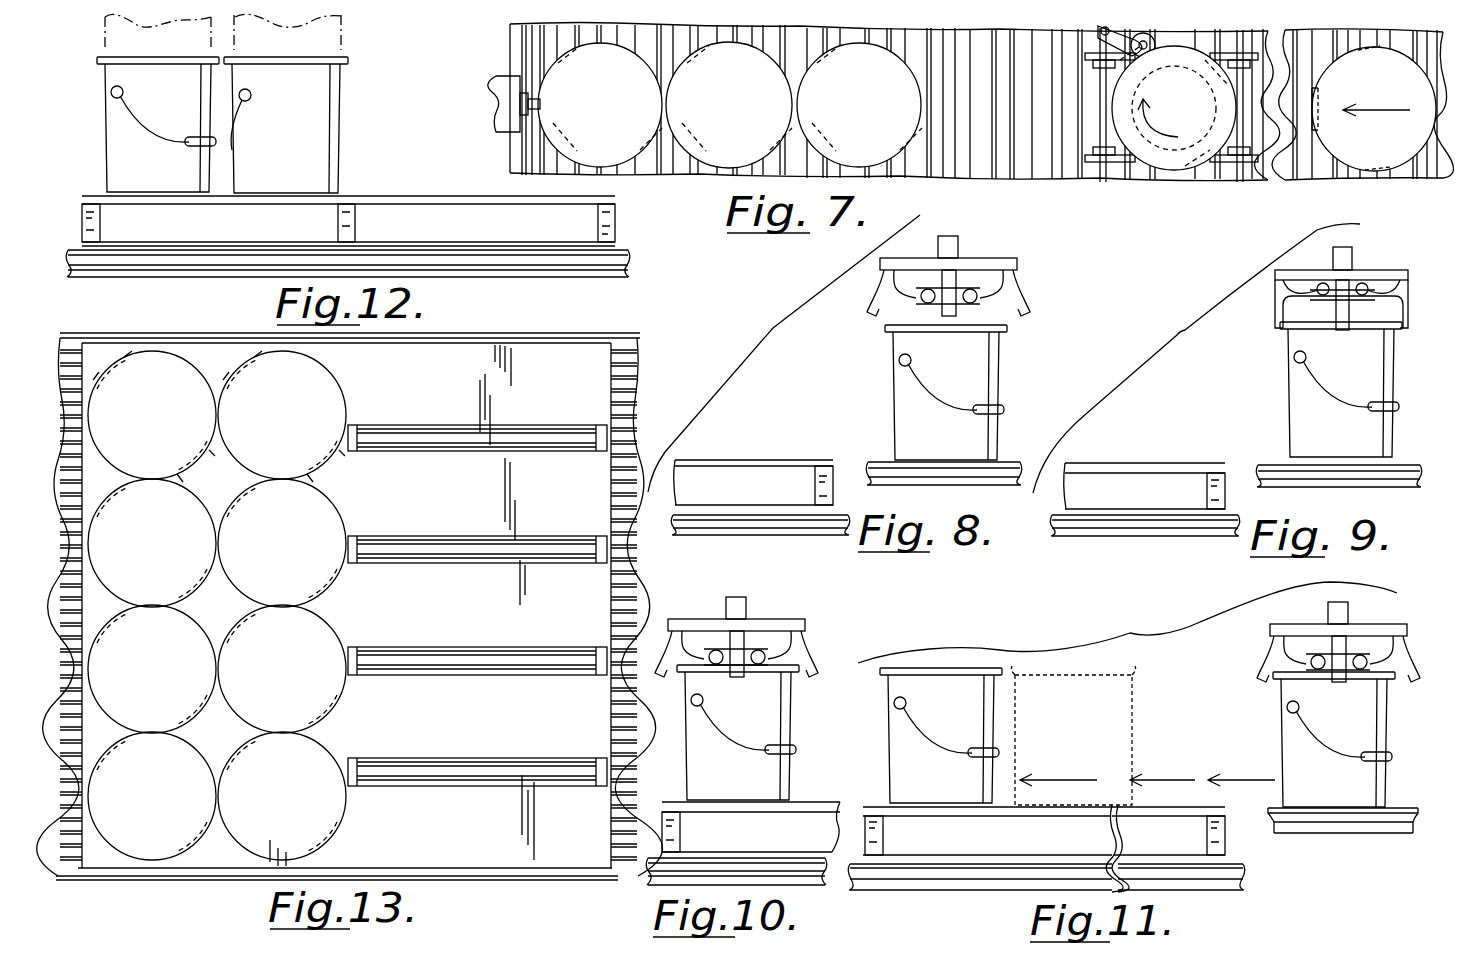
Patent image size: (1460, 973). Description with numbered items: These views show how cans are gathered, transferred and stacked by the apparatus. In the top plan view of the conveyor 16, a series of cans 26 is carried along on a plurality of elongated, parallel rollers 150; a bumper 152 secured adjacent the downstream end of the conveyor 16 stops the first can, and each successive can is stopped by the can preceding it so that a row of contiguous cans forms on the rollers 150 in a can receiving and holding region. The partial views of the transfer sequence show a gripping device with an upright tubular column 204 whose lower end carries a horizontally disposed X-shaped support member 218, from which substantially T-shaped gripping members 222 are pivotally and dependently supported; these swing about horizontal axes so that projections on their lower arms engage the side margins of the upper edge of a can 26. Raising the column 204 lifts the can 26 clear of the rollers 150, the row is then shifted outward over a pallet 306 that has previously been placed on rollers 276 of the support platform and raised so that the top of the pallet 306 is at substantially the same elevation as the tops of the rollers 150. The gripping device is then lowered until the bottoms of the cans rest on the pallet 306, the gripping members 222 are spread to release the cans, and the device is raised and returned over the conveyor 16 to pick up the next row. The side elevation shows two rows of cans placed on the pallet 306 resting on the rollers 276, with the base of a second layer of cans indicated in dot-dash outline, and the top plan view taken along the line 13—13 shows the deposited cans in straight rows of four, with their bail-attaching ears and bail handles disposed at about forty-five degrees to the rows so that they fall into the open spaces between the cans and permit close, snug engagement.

In FIG. 12, the line 13— 13 is at (187, 42).
In FIG. 7, the conveyor 16 is at (911, 192).
In FIG. 7, the can 26 is at (618, 99).
In FIG. 8, the can 26 is at (898, 402).
In FIG. 9, the can 26 is at (1298, 405).
In FIG. 10, the can 26 is at (690, 740).
In FIG. 7, the rollers 150 is at (993, 176).
In FIG. 8, the rollers 150 is at (878, 470).
In FIG. 9, the rollers 150 is at (1280, 468).
In FIG. 11, the rollers 150 is at (1353, 826).
In FIG. 7, the bumper 152 is at (522, 80).
In FIG. 9, the upright tubular column 204 is at (1352, 250).
In FIG. 8, the support member 218 is at (970, 262).
In FIG. 9, the support member 218 is at (1385, 275).
In FIG. 8, the gripping members 222 is at (872, 290).
In FIG. 9, the gripping members 222 is at (1274, 330).
In FIG. 12, the rollers 276 is at (515, 262).
In FIG. 13, the rollers 276 is at (620, 383).
In FIG. 8, the rollers 276 is at (796, 527).
In FIG. 9, the rollers 276 is at (1168, 530).
In FIG. 10, the rollers 276 is at (730, 872).
In FIG. 11, the rollers 276 is at (1005, 870).
In FIG. 12, the pallet 306 is at (430, 196).
In FIG. 13, the pallet 306 is at (535, 862).
In FIG. 8, the pallet 306 is at (790, 463).
In FIG. 9, the pallet 306 is at (1165, 465).
In FIG. 10, the pallet 306 is at (810, 803).
In FIG. 11, the pallet 306 is at (1103, 812).